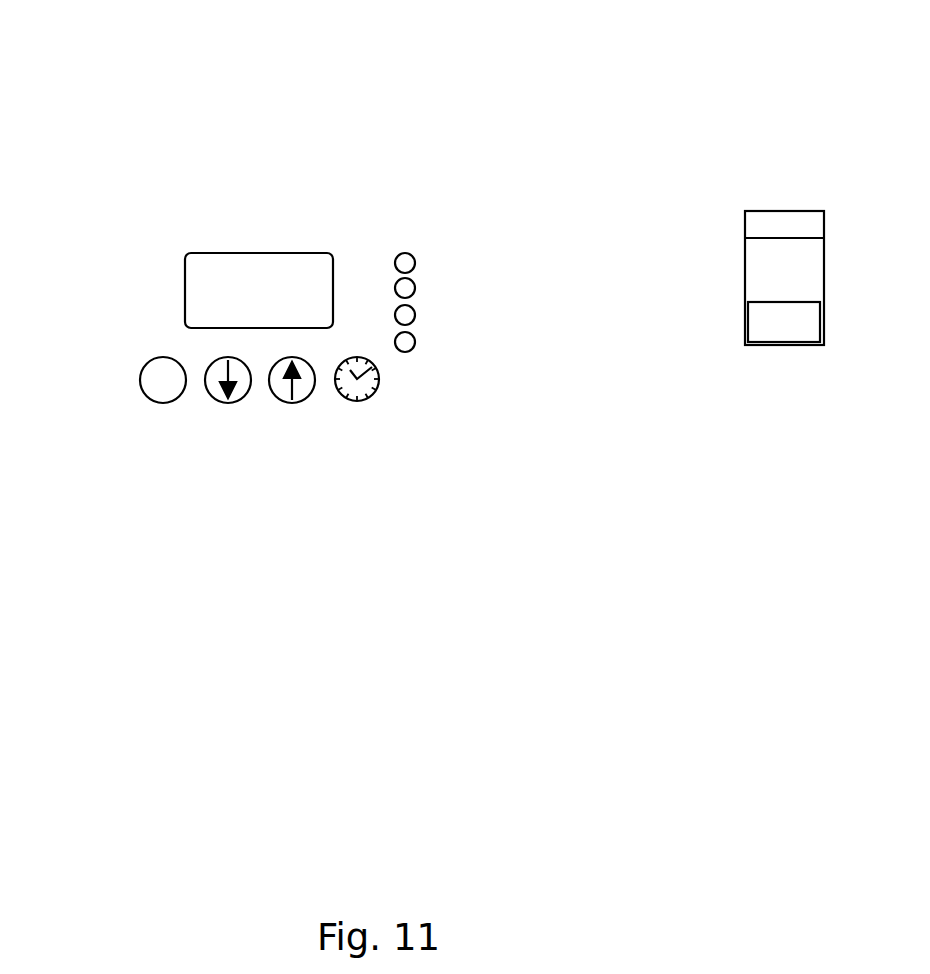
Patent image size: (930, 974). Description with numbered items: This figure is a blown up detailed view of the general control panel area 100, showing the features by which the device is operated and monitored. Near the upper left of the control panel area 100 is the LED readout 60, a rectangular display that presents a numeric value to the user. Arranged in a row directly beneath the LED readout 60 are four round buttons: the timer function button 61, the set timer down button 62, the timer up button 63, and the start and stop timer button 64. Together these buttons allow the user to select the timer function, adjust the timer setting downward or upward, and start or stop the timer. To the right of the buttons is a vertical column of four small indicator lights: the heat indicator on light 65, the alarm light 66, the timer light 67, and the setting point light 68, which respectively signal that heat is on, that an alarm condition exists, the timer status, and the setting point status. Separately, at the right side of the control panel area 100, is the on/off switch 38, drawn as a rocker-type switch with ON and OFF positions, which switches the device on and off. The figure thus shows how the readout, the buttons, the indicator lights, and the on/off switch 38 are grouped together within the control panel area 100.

The on/off switch 38 is at (800, 272).
The LED readout 60 is at (198, 263).
The timer function button 61 is at (152, 392).
The set timer down button 62 is at (212, 393).
The timer up button 63 is at (305, 398).
The start and stop timer button 64 is at (370, 395).
The heat indicator on light 65 is at (409, 258).
The alarm light 66 is at (404, 288).
The timer light 67 is at (406, 314).
The setting point light 68 is at (410, 350).
The general control panel area 100 is at (623, 449).